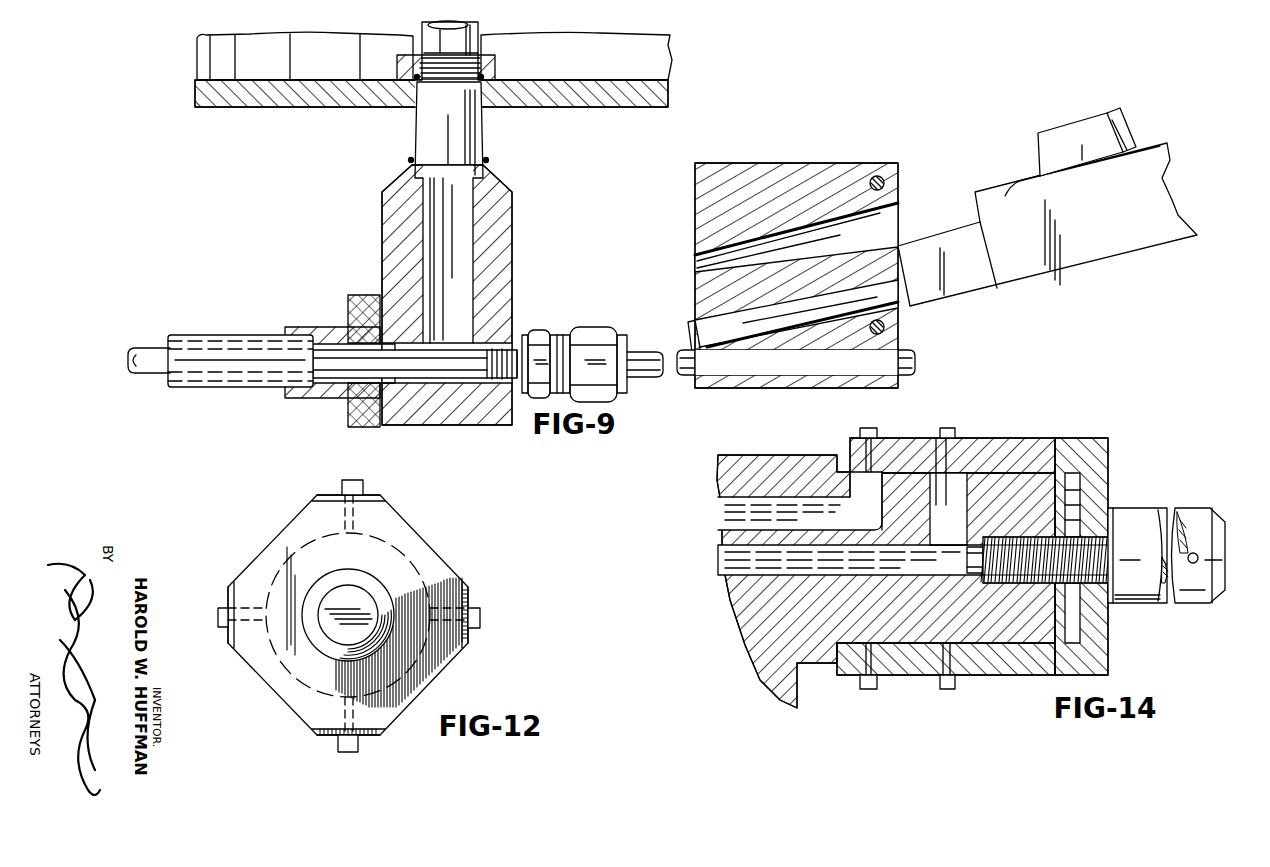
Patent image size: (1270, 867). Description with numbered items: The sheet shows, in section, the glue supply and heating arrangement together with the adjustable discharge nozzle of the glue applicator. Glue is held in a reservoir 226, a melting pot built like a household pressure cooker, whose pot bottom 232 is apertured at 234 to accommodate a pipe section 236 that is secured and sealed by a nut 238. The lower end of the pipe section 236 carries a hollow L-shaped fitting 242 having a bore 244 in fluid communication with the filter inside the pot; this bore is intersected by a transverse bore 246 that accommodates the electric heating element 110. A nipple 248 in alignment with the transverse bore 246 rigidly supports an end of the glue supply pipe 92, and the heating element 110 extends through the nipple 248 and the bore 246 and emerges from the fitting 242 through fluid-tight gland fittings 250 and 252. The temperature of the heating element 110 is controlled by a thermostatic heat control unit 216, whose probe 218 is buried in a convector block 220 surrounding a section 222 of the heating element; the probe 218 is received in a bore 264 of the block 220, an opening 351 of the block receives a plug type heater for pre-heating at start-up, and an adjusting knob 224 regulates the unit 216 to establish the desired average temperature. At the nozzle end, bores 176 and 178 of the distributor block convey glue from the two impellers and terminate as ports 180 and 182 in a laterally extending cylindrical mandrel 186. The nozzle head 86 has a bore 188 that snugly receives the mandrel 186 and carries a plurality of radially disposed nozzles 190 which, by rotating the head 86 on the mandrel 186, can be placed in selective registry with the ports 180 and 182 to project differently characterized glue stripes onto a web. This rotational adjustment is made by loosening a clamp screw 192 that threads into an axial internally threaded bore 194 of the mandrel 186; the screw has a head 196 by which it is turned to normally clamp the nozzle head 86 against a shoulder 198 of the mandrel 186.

In FIG. 9, the supply pipe 92 is at (208, 340).
In FIG. 9, the electric heating element 110 is at (135, 352).
In FIG. 9, the reservoir 226 is at (655, 48).
In FIG. 9, the pot bottom 232 is at (612, 107).
In FIG. 9, the aperture 234 is at (483, 92).
In FIG. 9, the pipe section 236 is at (420, 123).
In FIG. 9, the nut 238 is at (402, 55).
In FIG. 9, the L-shaped fitting 242 is at (512, 208).
In FIG. 9, the bore 244 is at (473, 232).
In FIG. 9, the transverse bore 246 is at (465, 383).
In FIG. 9, the nipple 248 is at (335, 398).
In FIG. 9, the gland fitting 250 is at (538, 330).
In FIG. 9, the gland fitting 252 is at (596, 327).
In FIG. 9, the bore 264 is at (690, 337).
In FIG. 9, the section of heating element 222 is at (680, 376).
In FIG. 9, the convector block 220 is at (832, 163).
In FIG. 9, the opening 351 is at (890, 222).
In FIG. 9, the probe 218 is at (867, 297).
In FIG. 9, the thermostatic heat control unit 216 is at (990, 192).
In FIG. 9, the adjusting knob 224 is at (1122, 122).
In FIG. 12, the nozzle head 86 is at (440, 562).
In FIG. 14, the nozzle head 86 is at (1018, 438).
In FIG. 12, the mandrel 186 is at (405, 556).
In FIG. 14, the mandrel 186 is at (1055, 480).
In FIG. 12, the nozzles 190 is at (362, 490).
In FIG. 14, the nozzles 190 is at (866, 428).
In FIG. 12, the head 196 is at (338, 593).
In FIG. 14, the head 196 is at (1196, 598).
In FIG. 14, the bore 176 is at (718, 517).
In FIG. 14, the bore 178 is at (725, 568).
In FIG. 14, the port 180 is at (855, 470).
In FIG. 14, the port 182 is at (958, 472).
In FIG. 14, the bore 188 is at (1080, 483).
In FIG. 14, the clamp screw 192 is at (1025, 574).
In FIG. 14, the internally threaded bore 194 is at (980, 560).
In FIG. 14, the shoulder 198 is at (842, 650).